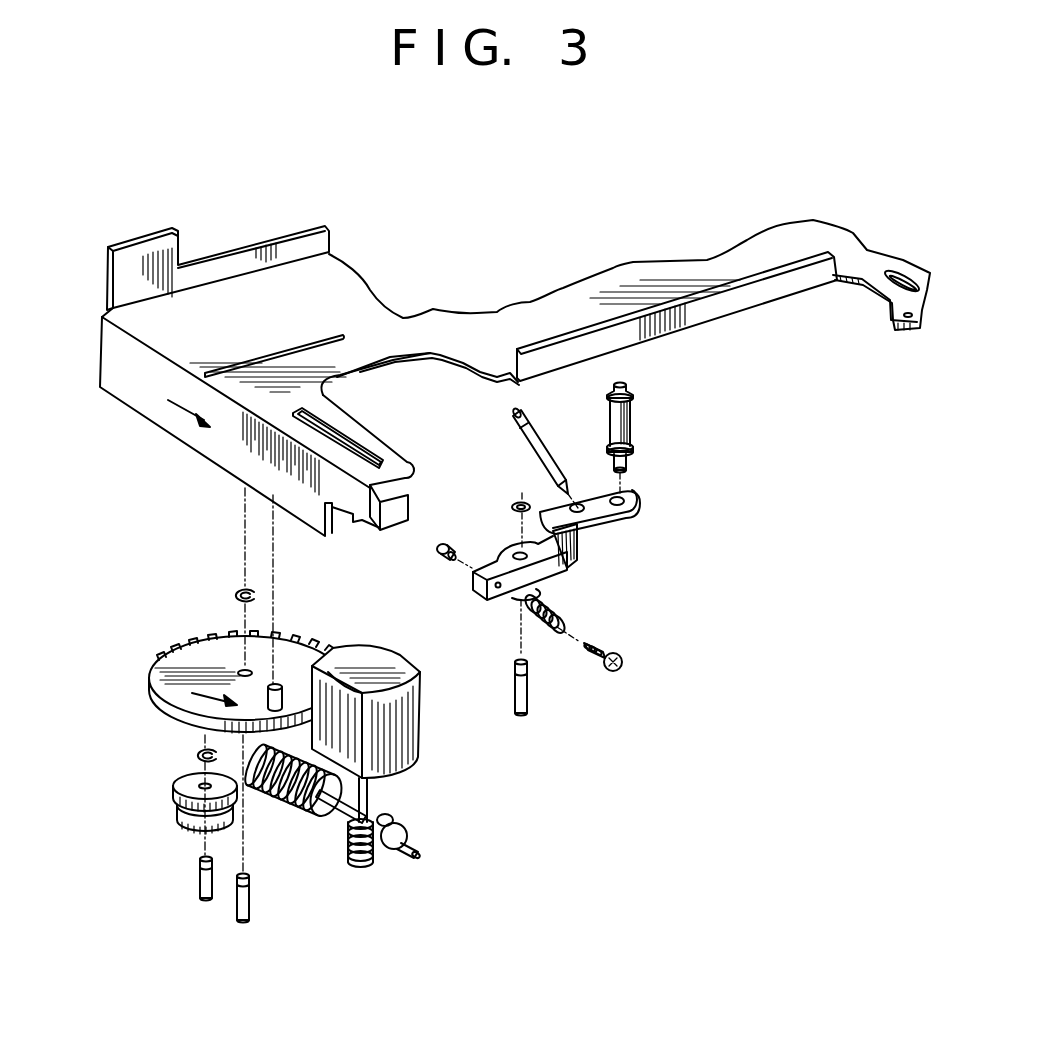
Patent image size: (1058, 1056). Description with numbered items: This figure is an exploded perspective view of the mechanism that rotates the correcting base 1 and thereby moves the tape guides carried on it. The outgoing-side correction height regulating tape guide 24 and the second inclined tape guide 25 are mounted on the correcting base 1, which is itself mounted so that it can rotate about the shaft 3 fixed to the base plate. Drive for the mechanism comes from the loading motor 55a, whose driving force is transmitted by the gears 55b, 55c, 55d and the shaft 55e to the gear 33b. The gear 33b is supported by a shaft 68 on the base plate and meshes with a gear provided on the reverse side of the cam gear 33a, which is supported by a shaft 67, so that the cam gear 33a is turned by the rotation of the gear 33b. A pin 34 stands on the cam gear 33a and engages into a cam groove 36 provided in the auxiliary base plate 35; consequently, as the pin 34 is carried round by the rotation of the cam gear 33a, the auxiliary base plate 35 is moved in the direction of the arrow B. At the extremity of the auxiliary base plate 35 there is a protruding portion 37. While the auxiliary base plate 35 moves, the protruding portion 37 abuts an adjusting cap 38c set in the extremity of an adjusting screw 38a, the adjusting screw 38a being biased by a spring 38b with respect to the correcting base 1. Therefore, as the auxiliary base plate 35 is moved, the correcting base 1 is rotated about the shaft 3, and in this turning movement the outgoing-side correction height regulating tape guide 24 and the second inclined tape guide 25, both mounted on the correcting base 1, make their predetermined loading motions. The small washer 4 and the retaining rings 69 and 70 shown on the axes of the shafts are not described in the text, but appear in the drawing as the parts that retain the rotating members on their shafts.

The correcting base 1 is at (623, 523).
The shaft 3 is at (527, 695).
The washer 4 is at (513, 497).
The outgoing-side correction height regulating tape guide 24 is at (637, 420).
The second inclined tape guide 25 is at (513, 413).
The cam gear 33a is at (150, 695).
The gear 33b is at (183, 827).
The pin 34 is at (278, 687).
The auxiliary base plate 35 is at (146, 410).
The cam groove 36 is at (339, 336).
The protruding portion 37 is at (400, 503).
The adjusting screw 38a is at (627, 670).
The spring 38b is at (553, 603).
The adjusting cap 38c is at (440, 557).
The loading motor 55a is at (420, 738).
The gear 55b is at (368, 863).
The gear 55c is at (408, 818).
The gear 55d is at (276, 803).
The shaft 55e is at (345, 818).
The shaft 67 is at (242, 920).
The shaft 68 is at (200, 897).
The E-ring 69 is at (233, 597).
The E-ring 70 is at (193, 755).